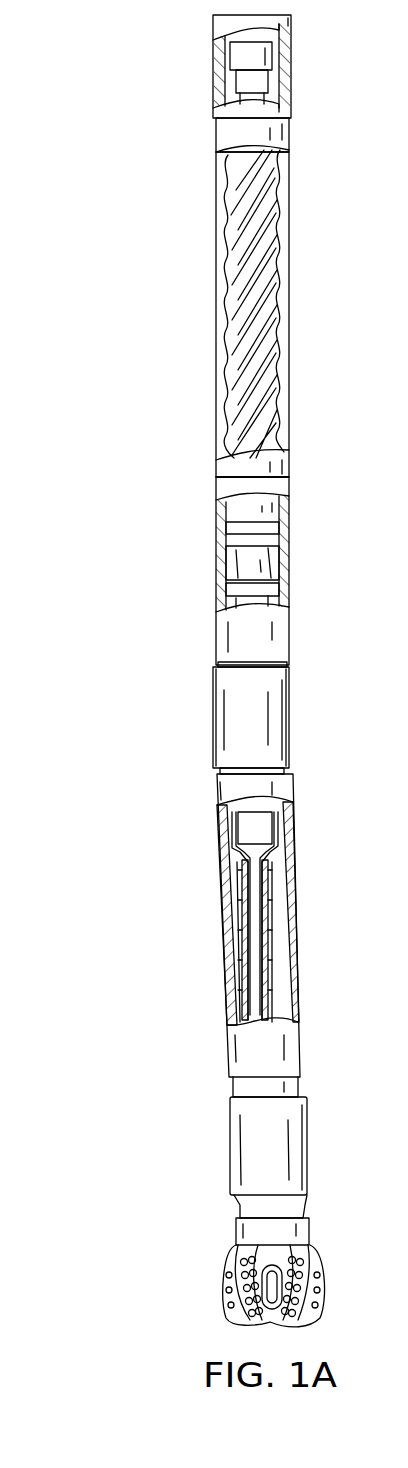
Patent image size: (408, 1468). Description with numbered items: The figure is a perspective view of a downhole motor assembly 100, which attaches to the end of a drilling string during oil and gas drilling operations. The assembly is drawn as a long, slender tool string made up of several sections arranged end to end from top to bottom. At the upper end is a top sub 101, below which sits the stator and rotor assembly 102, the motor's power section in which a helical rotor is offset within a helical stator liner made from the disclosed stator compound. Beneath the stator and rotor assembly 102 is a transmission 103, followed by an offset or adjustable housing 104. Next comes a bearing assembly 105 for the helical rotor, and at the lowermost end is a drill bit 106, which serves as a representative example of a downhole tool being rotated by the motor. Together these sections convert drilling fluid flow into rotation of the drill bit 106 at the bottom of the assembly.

The downhole motor assembly 100 is at (108, 84).
The top sub 101 is at (213, 63).
The stator and rotor assembly 102 is at (216, 287).
The transmission 103 is at (216, 565).
The offset or adjustable housing 104 is at (213, 720).
The bearing assembly 105 is at (224, 932).
The drill bit 106 is at (222, 1297).